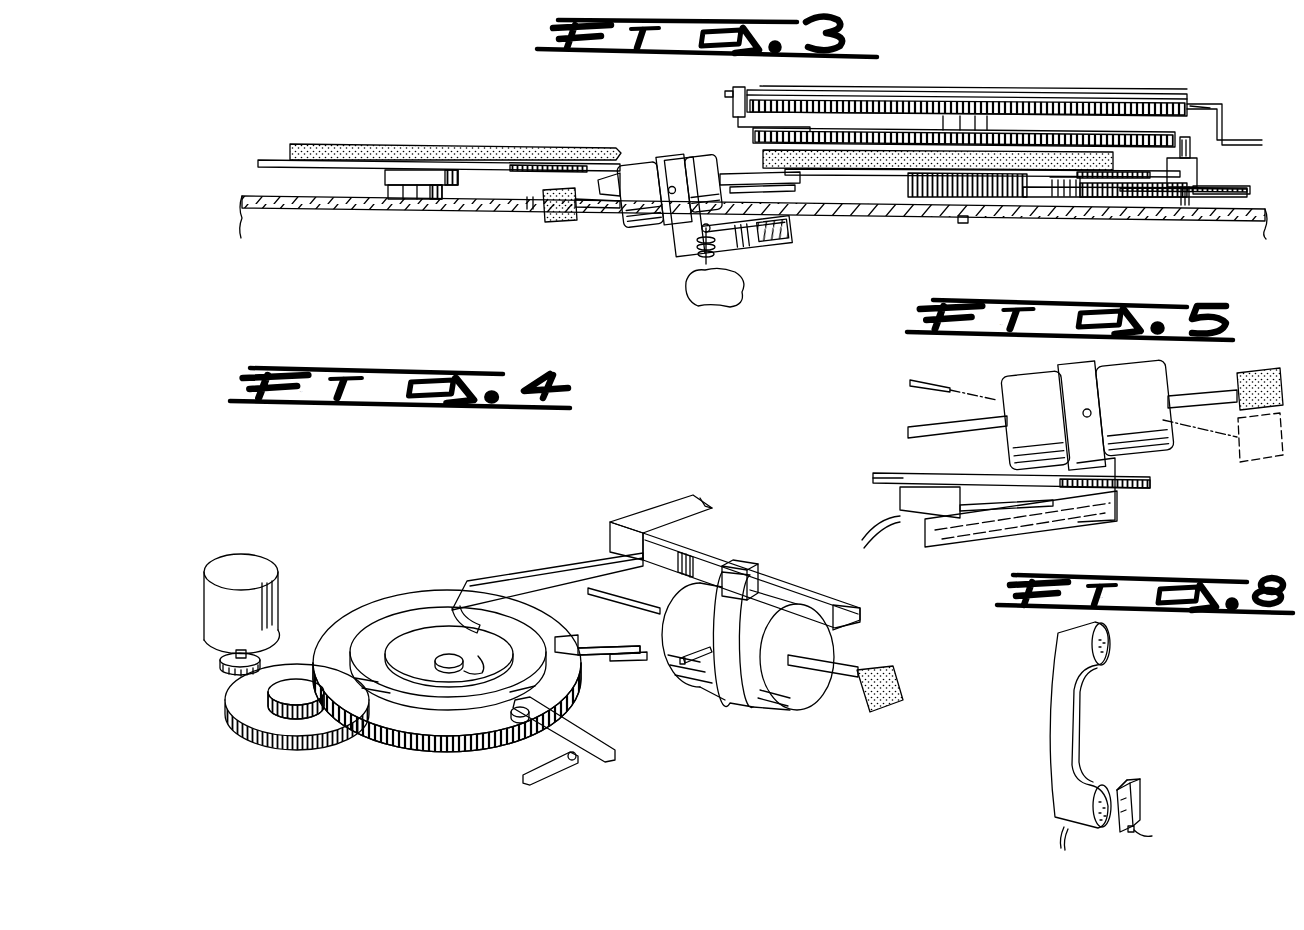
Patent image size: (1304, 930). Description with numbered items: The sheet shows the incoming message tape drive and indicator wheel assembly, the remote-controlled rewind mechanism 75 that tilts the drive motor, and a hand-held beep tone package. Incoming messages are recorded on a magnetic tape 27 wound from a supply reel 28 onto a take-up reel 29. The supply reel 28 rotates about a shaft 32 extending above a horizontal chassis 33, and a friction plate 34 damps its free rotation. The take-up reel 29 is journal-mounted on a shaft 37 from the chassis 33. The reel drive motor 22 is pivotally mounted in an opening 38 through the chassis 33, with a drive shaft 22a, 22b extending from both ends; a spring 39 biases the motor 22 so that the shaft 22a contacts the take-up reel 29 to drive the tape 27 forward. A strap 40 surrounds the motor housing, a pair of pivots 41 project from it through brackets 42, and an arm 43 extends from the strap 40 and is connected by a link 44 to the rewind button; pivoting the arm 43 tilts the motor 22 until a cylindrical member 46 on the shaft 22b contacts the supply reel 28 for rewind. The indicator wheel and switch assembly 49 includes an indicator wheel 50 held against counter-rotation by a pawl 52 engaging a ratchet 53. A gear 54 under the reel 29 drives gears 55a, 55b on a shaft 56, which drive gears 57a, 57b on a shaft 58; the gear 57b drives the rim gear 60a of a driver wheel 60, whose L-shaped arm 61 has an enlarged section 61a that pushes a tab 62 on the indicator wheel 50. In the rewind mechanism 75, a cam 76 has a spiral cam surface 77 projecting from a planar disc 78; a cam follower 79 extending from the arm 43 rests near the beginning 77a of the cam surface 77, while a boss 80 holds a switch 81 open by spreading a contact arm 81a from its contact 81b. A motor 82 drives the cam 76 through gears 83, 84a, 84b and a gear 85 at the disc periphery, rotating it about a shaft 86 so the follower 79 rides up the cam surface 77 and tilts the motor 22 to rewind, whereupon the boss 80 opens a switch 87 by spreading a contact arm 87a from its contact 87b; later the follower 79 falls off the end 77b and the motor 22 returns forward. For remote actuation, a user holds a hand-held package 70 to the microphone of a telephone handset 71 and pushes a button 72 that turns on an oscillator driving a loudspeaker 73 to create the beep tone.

In FIG. 3, the reel drive motor 22 is at (703, 155).
In FIG. 5, the reel drive motor 22 is at (1048, 426).
In FIG. 4, the reel drive motor 22 is at (788, 605).
In FIG. 3, the drive shaft 22a is at (796, 187).
In FIG. 5, the drive shaft 22a is at (914, 429).
In FIG. 4, the drive shaft 22a is at (695, 555).
In FIG. 3, the drive shaft 22b is at (612, 208).
In FIG. 5, the drive shaft 22b is at (1190, 398).
In FIG. 4, the drive shaft 22b is at (873, 672).
In FIG. 3, the magnetic tape 27 is at (500, 154).
In FIG. 3, the supply reel 28 is at (262, 160).
In FIG. 3, the take-up reel 29 is at (830, 177).
In FIG. 3, the shaft 32 is at (427, 170).
In FIG. 3, the chassis 33 is at (322, 208).
In FIG. 3, the friction plate 34 is at (395, 199).
In FIG. 3, the shaft 37 is at (962, 223).
In FIG. 3, the opening 38 is at (530, 209).
In FIG. 3, the spring 39 is at (700, 250).
In FIG. 3, the strap 40 is at (657, 160).
In FIG. 5, the strap 40 is at (1067, 378).
In FIG. 4, the strap 40 is at (738, 708).
In FIG. 3, the pivots 41 is at (676, 189).
In FIG. 5, the pivots 41 is at (1092, 414).
In FIG. 4, the pivots 41 is at (685, 665).
In FIG. 3, the brackets 42 is at (605, 180).
In FIG. 4, the brackets 42 is at (845, 608).
In FIG. 3, the arm 43 is at (770, 252).
In FIG. 5, the arm 43 is at (1080, 522).
In FIG. 4, the arm 43 is at (698, 512).
In FIG. 3, the link 44 is at (748, 275).
In FIG. 4, the link 44 is at (650, 512).
In FIG. 3, the cylindrical member 46 is at (554, 222).
In FIG. 4, the cylindrical member 46 is at (877, 710).
In FIG. 3, the indicator wheel and switch assembly 49 is at (1133, 94).
In FIG. 3, the indicator wheel 50 is at (1028, 102).
In FIG. 3, the pawl 52 is at (1208, 104).
In FIG. 3, the ratchet 53 is at (1070, 103).
In FIG. 3, the gear 54 is at (920, 197).
In FIG. 3, the gear 55a is at (1050, 197).
In FIG. 3, the gear 55b is at (1080, 198).
In FIG. 3, the shaft 56 is at (1103, 198).
In FIG. 3, the gear 57a is at (1223, 197).
In FIG. 3, the gear 57b is at (1191, 148).
In FIG. 3, the shaft 58 is at (1183, 205).
In FIG. 3, the driver wheel 60 is at (895, 128).
In FIG. 3, the rim gear 60a is at (1017, 134).
In FIG. 3, the L-shaped arm 61 is at (738, 124).
In FIG. 3, the arm section 61a is at (744, 94).
In FIG. 3, the tab 62 is at (728, 93).
In FIG. 8, the hand-held package 70 is at (1145, 795).
In FIG. 8, the telephone handset 71 is at (1050, 735).
In FIG. 8, the button 72 is at (1159, 834).
In FIG. 8, the loudspeaker 73 is at (1127, 775).
In FIG. 4, the remote-controlled rewind mechanism 75 is at (553, 496).
In FIG. 5, the cam 76 is at (870, 479).
In FIG. 4, the cam 76 is at (405, 590).
In FIG. 5, the spiral cam surface 77 is at (990, 505).
In FIG. 4, the spiral cam surface 77 is at (422, 698).
In FIG. 4, the beginning of cam surface 77a is at (440, 615).
In FIG. 4, the end of cam surface 77b is at (492, 656).
In FIG. 5, the planar disc 78 is at (1146, 486).
In FIG. 4, the planar disc 78 is at (348, 618).
In FIG. 5, the cam follower 79 is at (895, 512).
In FIG. 4, the cam follower 79 is at (510, 570).
In FIG. 4, the boss 80 is at (520, 722).
In FIG. 4, the switch 81 is at (590, 776).
In FIG. 4, the contact arm 81a is at (608, 748).
In FIG. 4, the contact 81b is at (545, 785).
In FIG. 4, the motor 82 is at (240, 555).
In FIG. 4, the gear 83 is at (225, 668).
In FIG. 4, the gear 84a is at (255, 738).
In FIG. 4, the gear 84b is at (300, 716).
In FIG. 4, the gear 85 is at (378, 742).
In FIG. 4, the shaft 86 is at (444, 649).
In FIG. 4, the switch 87 is at (578, 625).
In FIG. 4, the contact arm 87a is at (592, 660).
In FIG. 4, the contact 87b is at (640, 662).